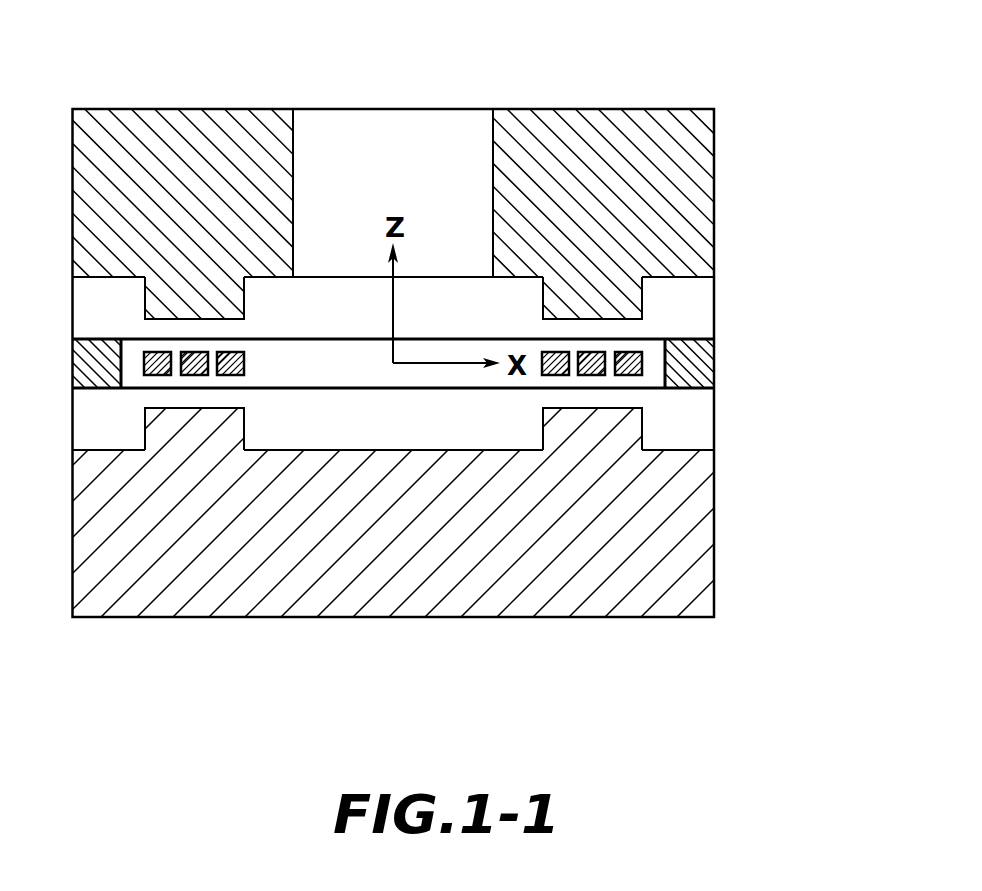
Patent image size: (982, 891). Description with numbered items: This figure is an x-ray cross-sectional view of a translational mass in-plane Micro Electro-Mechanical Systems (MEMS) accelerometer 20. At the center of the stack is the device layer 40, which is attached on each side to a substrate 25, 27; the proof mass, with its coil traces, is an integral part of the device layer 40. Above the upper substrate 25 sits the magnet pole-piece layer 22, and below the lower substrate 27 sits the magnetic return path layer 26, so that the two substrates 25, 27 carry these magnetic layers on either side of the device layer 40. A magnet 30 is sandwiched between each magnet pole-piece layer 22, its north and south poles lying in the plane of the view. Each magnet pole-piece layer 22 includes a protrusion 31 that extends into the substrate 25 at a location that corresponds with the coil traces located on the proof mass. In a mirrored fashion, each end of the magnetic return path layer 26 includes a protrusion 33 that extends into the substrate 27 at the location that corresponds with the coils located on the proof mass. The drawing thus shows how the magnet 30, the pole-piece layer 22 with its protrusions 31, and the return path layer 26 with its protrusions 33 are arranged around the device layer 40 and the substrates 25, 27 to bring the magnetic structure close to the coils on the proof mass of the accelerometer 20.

The accelerometer 20 is at (776, 54).
The magnet pole-piece layer 22 is at (714, 182).
The substrate 25 is at (714, 323).
The magnetic return path layer 26 is at (714, 534).
The substrate 27 is at (714, 414).
The magnet 30 is at (392, 118).
The protrusion 31 is at (625, 298).
The protrusion 33 is at (623, 426).
The device layer 40 is at (703, 360).